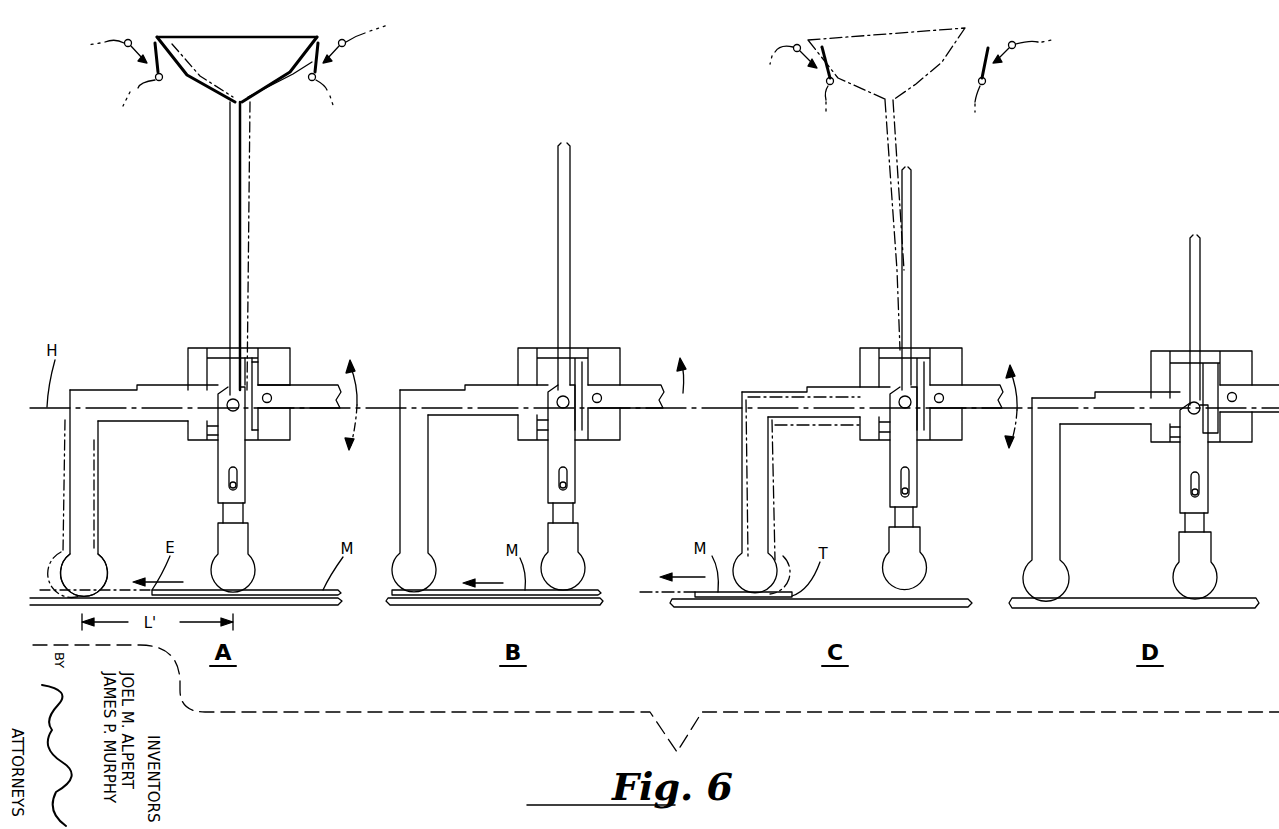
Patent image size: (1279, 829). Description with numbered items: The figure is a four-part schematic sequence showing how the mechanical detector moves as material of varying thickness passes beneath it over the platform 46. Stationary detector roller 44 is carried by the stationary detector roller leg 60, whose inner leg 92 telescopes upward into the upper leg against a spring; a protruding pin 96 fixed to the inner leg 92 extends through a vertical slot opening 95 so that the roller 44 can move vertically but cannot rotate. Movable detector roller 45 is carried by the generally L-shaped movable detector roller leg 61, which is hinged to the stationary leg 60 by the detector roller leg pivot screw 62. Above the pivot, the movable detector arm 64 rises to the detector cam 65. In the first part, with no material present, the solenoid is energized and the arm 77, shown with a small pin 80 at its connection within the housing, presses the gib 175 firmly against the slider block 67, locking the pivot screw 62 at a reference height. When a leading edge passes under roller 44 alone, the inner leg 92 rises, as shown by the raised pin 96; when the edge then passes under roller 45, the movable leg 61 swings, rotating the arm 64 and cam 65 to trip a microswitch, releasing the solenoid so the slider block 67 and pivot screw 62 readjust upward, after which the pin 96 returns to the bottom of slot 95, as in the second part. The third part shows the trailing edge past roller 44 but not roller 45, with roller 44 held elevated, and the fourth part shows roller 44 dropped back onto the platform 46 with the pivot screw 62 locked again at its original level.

The stationary detector roller 44 is at (243, 567).
The movable detector roller 45 is at (87, 572).
The platform 46 is at (323, 604).
The stationary detector roller leg 60 is at (252, 470).
The movable detector roller leg 61 is at (88, 494).
The detector roller leg pivot screw 62 is at (230, 401).
The movable detector arm 64 is at (233, 187).
The detector cam 65 is at (262, 70).
The slider block 67 is at (246, 362).
The arm 77 is at (318, 400).
The pin 80 is at (271, 396).
The inner leg 92 is at (240, 517).
The vertical slot opening 95 is at (559, 475).
The protruding pin 96 is at (230, 483).
The gib 175 is at (262, 366).